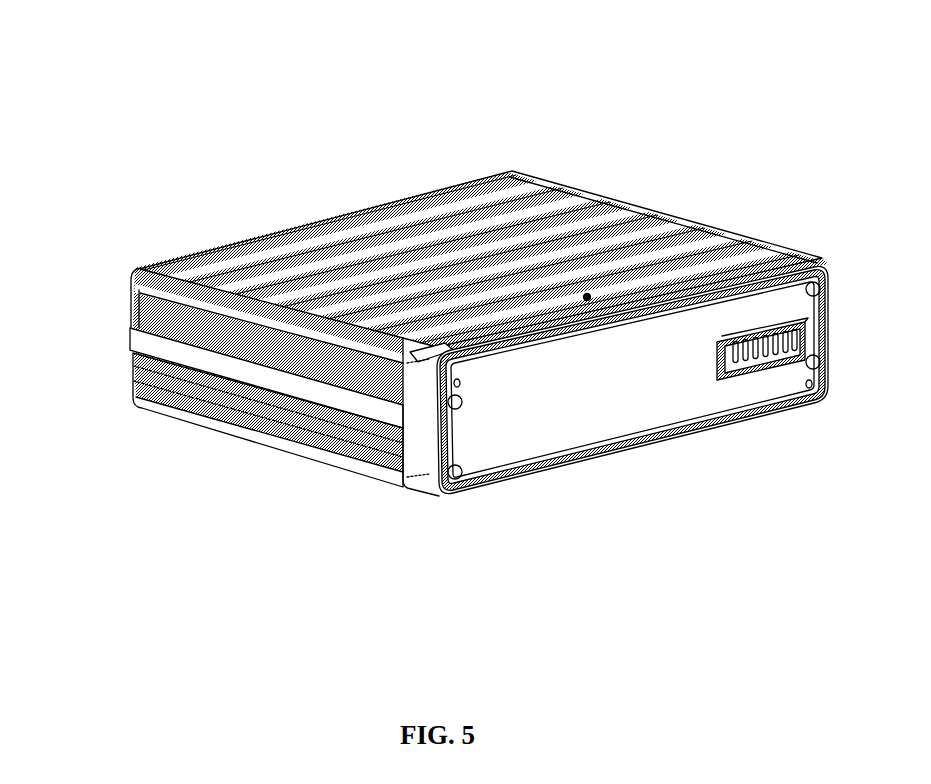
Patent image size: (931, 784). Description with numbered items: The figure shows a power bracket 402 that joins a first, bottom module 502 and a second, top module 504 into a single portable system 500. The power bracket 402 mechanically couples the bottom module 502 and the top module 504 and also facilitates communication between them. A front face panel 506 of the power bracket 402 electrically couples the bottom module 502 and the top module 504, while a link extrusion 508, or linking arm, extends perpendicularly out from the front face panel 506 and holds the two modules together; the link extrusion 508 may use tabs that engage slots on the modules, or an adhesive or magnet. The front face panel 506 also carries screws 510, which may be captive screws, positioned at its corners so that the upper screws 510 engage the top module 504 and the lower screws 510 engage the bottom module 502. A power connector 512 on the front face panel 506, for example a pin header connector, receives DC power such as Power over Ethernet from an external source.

The single portable system 500 is at (350, 118).
The top module 504 is at (623, 204).
The link extrusion 508 is at (130, 333).
The bottom module 502 is at (170, 414).
The power bracket 402 is at (420, 490).
The front face panel 506 is at (594, 430).
The screws 510 is at (831, 400).
The power connector 512 is at (775, 372).